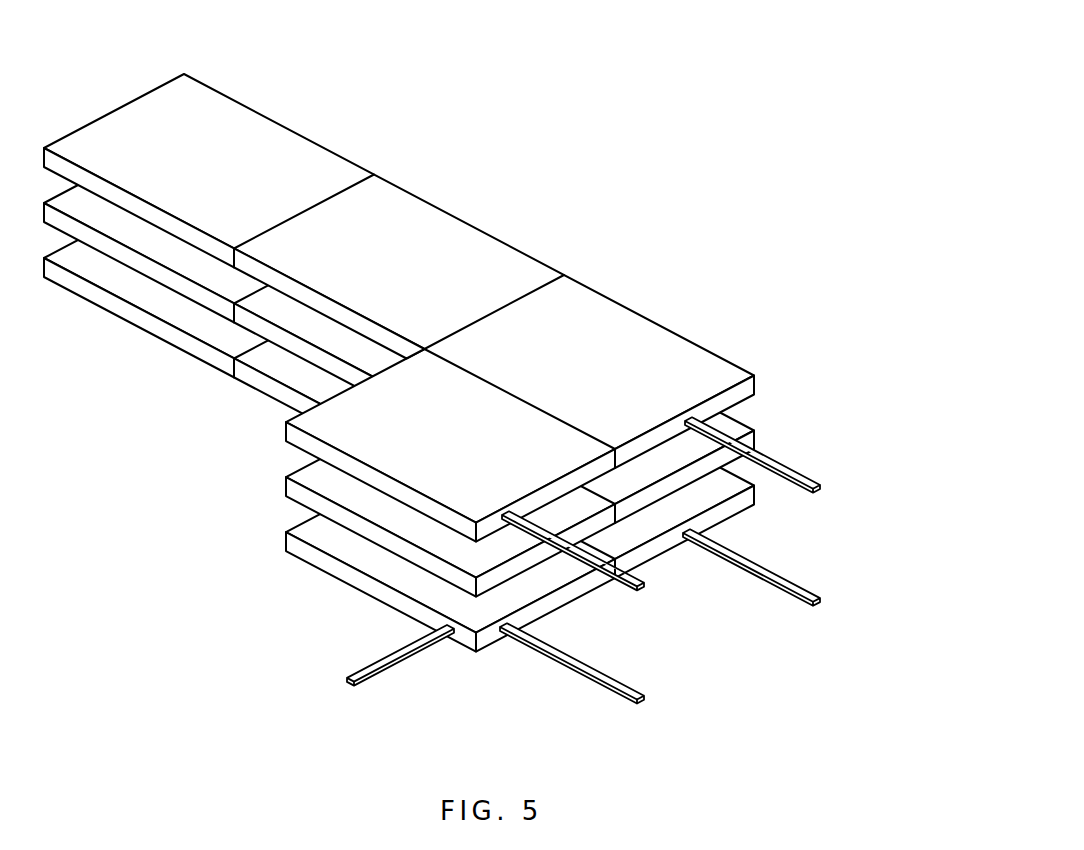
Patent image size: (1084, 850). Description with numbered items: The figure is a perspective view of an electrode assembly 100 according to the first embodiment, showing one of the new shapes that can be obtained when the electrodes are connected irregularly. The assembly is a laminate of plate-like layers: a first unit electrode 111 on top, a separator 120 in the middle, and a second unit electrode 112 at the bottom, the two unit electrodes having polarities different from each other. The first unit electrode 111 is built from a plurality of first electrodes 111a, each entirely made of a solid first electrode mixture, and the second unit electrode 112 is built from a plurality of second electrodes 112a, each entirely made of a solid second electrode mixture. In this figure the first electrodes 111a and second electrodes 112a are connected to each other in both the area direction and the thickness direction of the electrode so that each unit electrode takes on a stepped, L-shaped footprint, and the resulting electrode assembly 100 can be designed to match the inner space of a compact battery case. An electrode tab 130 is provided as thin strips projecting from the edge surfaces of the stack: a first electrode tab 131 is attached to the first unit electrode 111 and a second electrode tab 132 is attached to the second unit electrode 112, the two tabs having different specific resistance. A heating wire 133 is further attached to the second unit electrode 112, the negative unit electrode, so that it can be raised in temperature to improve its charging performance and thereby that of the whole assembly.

The electrode assembly 100 is at (570, 60).
The first unit electrode 111 is at (702, 168).
The first electrode 111a is at (523, 267).
The second unit electrode 112 is at (302, 650).
The second electrode 112a is at (276, 368).
The separator 120 is at (742, 428).
The electrode tab 130 is at (910, 566).
The first electrode tab 131 is at (640, 585).
The second electrode tab 132 is at (822, 488).
The heating wire 133 is at (408, 658).